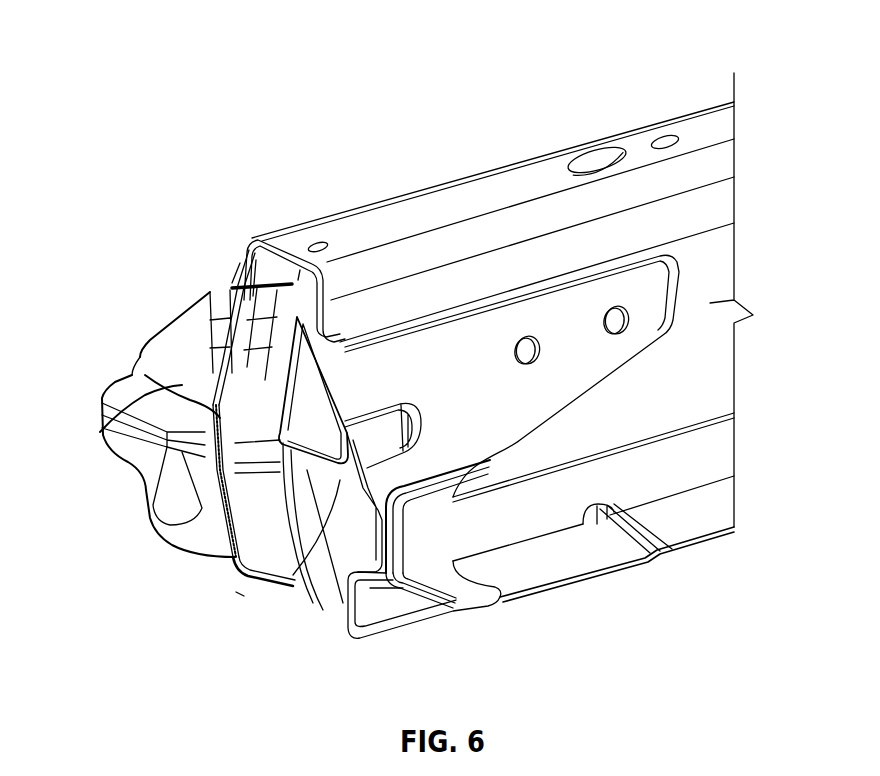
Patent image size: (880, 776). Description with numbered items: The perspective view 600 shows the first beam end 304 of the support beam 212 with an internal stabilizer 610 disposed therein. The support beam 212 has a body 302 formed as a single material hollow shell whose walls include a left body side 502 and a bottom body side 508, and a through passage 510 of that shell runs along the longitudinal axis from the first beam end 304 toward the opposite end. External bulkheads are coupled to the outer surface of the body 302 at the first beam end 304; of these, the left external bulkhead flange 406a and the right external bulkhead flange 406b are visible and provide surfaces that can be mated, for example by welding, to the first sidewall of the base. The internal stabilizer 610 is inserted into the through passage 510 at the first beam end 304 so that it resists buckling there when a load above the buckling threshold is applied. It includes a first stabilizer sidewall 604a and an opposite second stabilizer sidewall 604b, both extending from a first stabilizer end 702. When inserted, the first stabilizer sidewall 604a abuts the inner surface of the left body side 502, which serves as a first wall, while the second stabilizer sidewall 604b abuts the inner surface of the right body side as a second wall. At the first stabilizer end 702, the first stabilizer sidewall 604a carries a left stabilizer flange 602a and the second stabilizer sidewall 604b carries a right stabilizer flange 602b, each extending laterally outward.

The perspective view 600 is at (124, 60).
The body 302 is at (695, 333).
The support beam 212 is at (703, 267).
The left body side 502 is at (308, 272).
The first stabilizer sidewall 604a is at (257, 265).
The second stabilizer sidewall 604b is at (283, 282).
The internal stabilizer 610 is at (226, 280).
The left stabilizer flange 602a is at (172, 338).
The right stabilizer flange 602b is at (328, 405).
The first stabilizer end 702 is at (154, 424).
The left external bulkhead flange 406a is at (188, 383).
The right external bulkhead flange 406b is at (272, 565).
The through passage 510 is at (253, 543).
The first beam end 304 is at (230, 597).
The bottom body side 508 is at (287, 574).